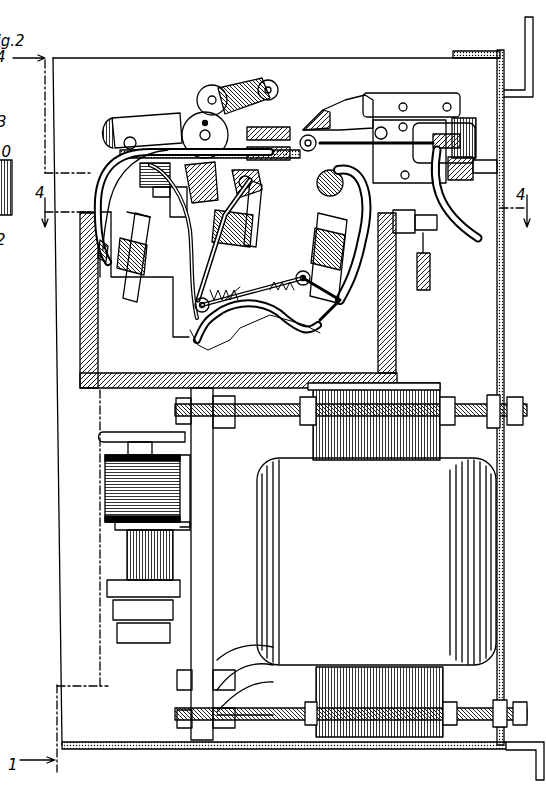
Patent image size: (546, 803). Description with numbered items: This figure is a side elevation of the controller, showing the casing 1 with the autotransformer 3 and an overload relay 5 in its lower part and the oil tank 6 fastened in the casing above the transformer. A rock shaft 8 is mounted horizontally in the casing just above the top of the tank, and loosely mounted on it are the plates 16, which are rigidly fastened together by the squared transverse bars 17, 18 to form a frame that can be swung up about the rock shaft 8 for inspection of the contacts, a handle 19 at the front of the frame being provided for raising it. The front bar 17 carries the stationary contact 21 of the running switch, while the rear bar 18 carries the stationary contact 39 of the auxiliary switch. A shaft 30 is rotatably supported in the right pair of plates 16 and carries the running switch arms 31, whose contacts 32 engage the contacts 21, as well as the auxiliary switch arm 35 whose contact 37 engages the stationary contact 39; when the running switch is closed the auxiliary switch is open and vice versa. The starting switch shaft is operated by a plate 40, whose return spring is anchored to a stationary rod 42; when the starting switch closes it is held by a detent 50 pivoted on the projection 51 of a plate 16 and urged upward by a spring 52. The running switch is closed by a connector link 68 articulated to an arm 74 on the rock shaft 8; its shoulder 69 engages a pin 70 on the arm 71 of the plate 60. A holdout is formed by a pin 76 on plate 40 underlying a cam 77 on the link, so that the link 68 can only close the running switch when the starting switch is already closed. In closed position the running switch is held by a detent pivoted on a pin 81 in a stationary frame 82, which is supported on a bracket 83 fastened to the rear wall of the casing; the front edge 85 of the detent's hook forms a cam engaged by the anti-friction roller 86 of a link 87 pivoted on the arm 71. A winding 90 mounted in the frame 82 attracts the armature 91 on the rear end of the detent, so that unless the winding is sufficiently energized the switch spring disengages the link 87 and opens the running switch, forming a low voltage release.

The casing 1 is at (498, 283).
The autotransformer 3 is at (262, 543).
The overload relay 5 is at (105, 486).
The oil tank 6 is at (80, 318).
The rock shaft 8 is at (345, 192).
The plates 16 is at (111, 196).
The front transverse bar 17 is at (121, 258).
The rear transverse bar 18 is at (343, 247).
The handle 19 is at (100, 247).
The stationary contact of running switch 21 is at (133, 306).
The shaft 30 is at (254, 222).
The running switch arms 31 is at (218, 268).
The contacts 32 is at (202, 346).
The auxiliary switch arm 35 is at (282, 255).
The contact 37 is at (330, 312).
The stationary contact of auxiliary switch 39 is at (332, 282).
The plate 40 is at (232, 205).
The stationary rod 42 is at (186, 325).
The detent 50 is at (108, 125).
The projection 51 is at (124, 146).
The spring 52 is at (150, 178).
The plate 60 is at (228, 195).
The connector link 68 is at (157, 118).
The shoulder 69 is at (192, 125).
The pin 70 is at (210, 130).
The arm 71 is at (202, 95).
The arm 74 is at (300, 152).
The pin 76 is at (252, 183).
The cam 77 is at (200, 168).
The pin 81 is at (382, 127).
The stationary frame 82 is at (409, 151).
The bracket 83 is at (492, 170).
The front edge of hook 85 is at (336, 112).
The anti-friction roller 86 is at (267, 80).
The link 87 is at (240, 90).
The winding 90 is at (468, 122).
The armature 91 is at (428, 100).